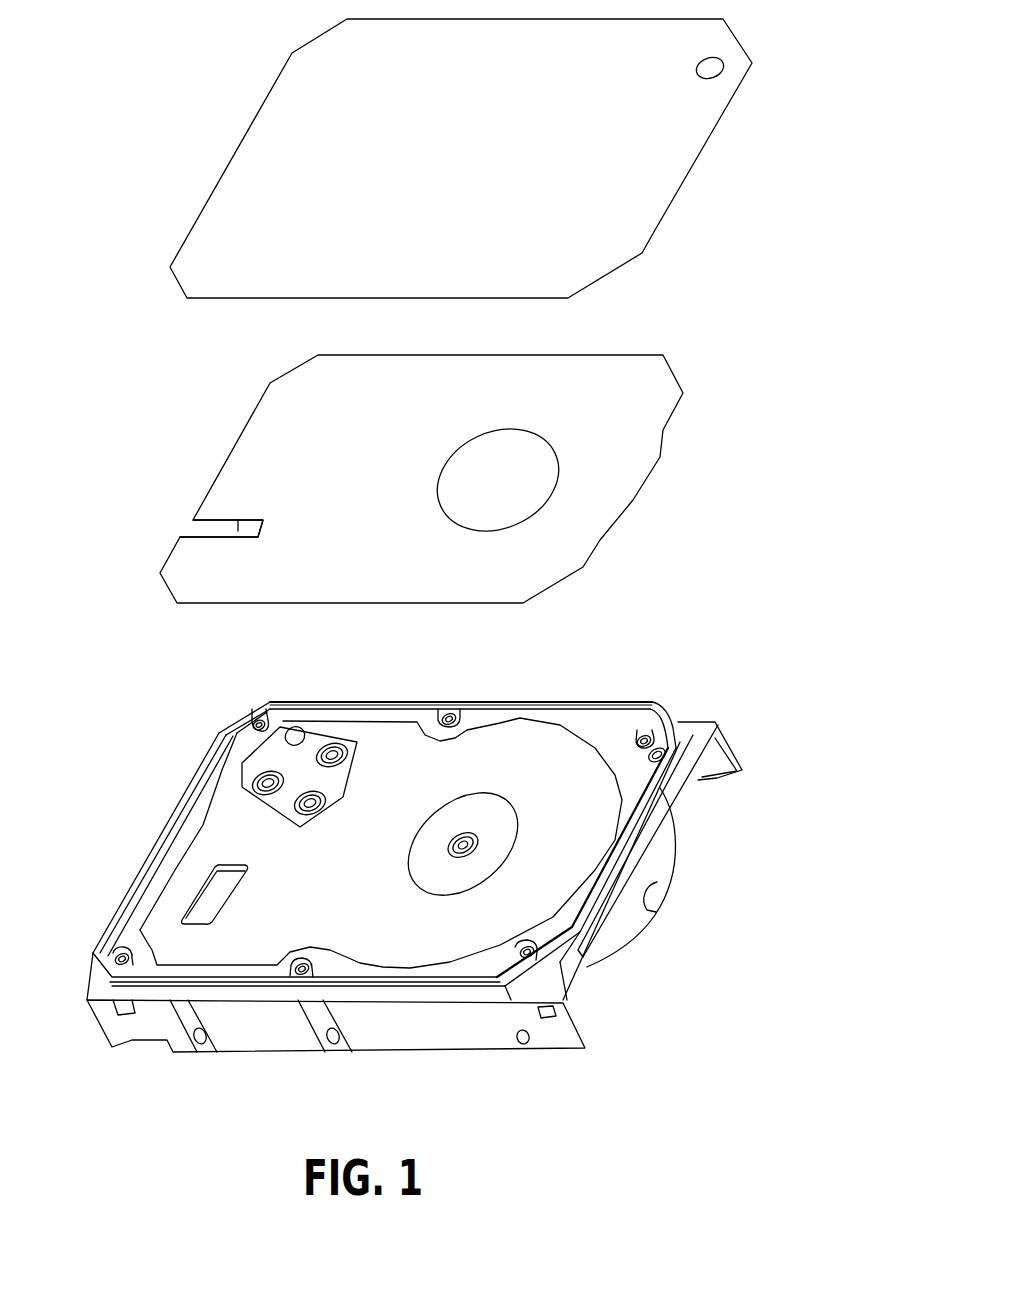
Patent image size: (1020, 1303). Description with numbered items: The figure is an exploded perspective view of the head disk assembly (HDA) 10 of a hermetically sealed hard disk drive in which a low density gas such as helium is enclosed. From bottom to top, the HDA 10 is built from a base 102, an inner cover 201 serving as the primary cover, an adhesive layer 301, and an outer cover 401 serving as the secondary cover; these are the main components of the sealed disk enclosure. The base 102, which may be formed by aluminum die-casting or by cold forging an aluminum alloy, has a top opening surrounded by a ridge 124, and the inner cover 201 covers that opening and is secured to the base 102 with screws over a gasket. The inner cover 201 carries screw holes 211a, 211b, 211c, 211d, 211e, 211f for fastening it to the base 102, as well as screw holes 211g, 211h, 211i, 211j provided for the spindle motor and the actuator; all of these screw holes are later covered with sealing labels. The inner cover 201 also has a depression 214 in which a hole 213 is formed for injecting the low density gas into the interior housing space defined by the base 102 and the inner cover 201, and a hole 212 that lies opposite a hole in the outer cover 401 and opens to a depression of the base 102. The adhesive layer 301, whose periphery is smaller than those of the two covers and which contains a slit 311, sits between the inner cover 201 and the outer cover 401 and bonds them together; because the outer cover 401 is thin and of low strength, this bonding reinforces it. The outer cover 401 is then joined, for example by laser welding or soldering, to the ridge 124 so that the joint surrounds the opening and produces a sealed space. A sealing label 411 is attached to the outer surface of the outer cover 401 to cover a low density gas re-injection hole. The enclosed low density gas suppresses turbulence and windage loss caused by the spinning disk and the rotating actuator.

The head disk assembly 10 is at (132, 14).
The base 102 is at (453, 1022).
The ridge 124 is at (542, 708).
The inner cover 201 is at (233, 805).
The screw hole 211a is at (260, 721).
The screw hole 211b is at (452, 712).
The screw hole 211c is at (647, 736).
The screw hole 211d is at (526, 945).
The screw hole 211e is at (303, 962).
The screw hole 211f is at (120, 953).
The screw hole for spindle motor 211g is at (463, 833).
The screw hole for actuator 211h is at (357, 750).
The screw hole for actuator 211i is at (333, 800).
The screw hole for actuator 211j is at (250, 788).
The hole of inner cover 212 is at (663, 750).
The hole 213 is at (207, 910).
The depression 214 is at (217, 868).
The adhesive layer 301 is at (658, 453).
The slit 311 is at (237, 522).
The outer cover 401 is at (657, 228).
The sealing label 411 is at (697, 77).